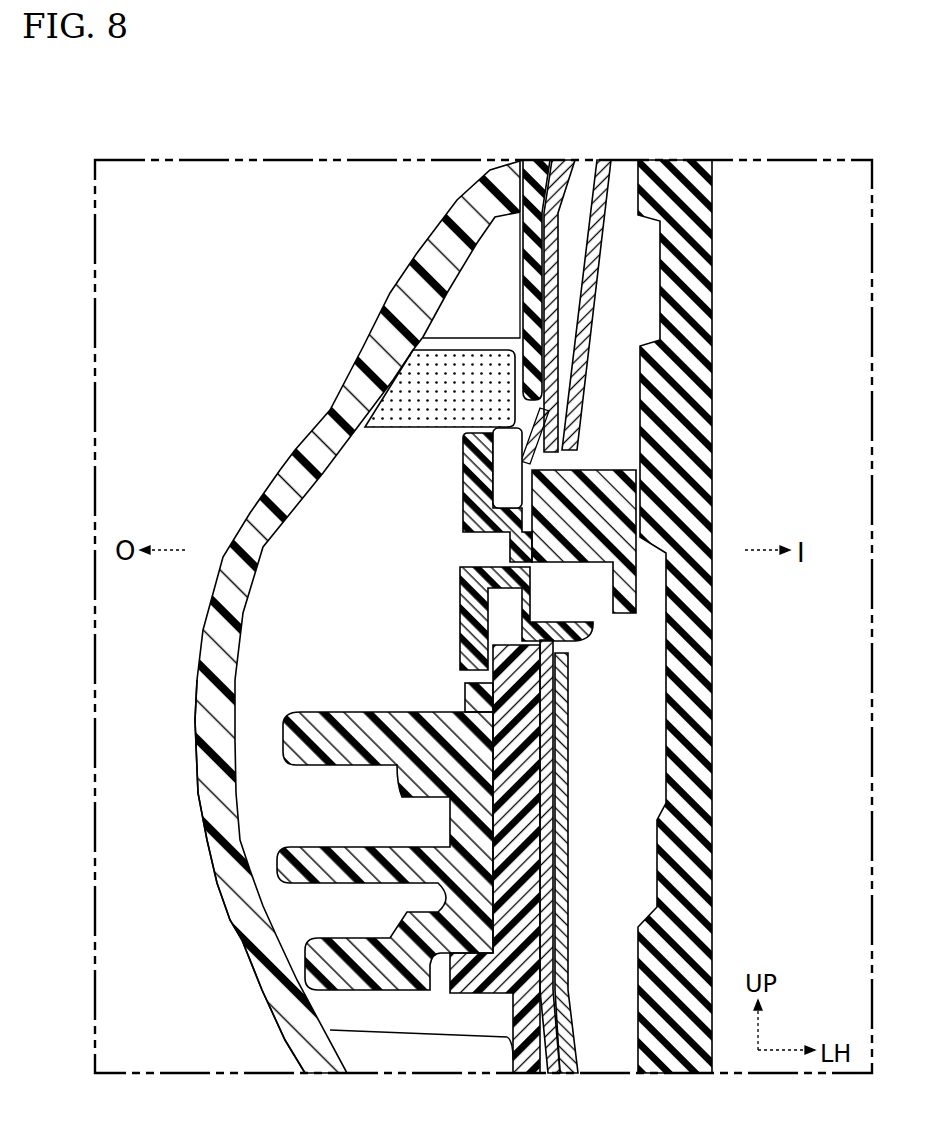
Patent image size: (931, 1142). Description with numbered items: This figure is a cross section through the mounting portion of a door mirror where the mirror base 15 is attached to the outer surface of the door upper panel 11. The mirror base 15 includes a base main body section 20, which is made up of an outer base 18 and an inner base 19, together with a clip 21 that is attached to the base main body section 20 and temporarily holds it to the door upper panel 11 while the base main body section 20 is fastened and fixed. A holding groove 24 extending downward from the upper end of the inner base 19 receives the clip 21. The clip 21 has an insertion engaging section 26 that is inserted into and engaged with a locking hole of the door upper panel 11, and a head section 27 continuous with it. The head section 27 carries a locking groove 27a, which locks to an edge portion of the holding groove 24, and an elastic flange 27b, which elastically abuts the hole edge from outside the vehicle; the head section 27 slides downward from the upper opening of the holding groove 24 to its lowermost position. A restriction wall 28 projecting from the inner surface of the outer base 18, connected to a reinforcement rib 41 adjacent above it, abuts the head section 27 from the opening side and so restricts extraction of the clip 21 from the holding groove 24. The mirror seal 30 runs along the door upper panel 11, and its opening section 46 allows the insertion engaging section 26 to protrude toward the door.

The door upper panel 11 is at (603, 277).
The mirror base 15 is at (270, 470).
The outer base 18 is at (221, 896).
The inner base 19 is at (430, 708).
The base main body section 20 is at (316, 835).
The clip 21 is at (612, 463).
The holding groove 24 is at (502, 432).
The insertion engaging section 26 is at (623, 510).
The head section 27 is at (462, 497).
The locking groove 27a is at (492, 602).
The elastic flange 27b is at (562, 668).
The restriction wall 28 is at (425, 440).
The mirror seal 30 is at (545, 255).
The reinforcement rib 41 is at (453, 330).
The opening section 46 is at (557, 417).